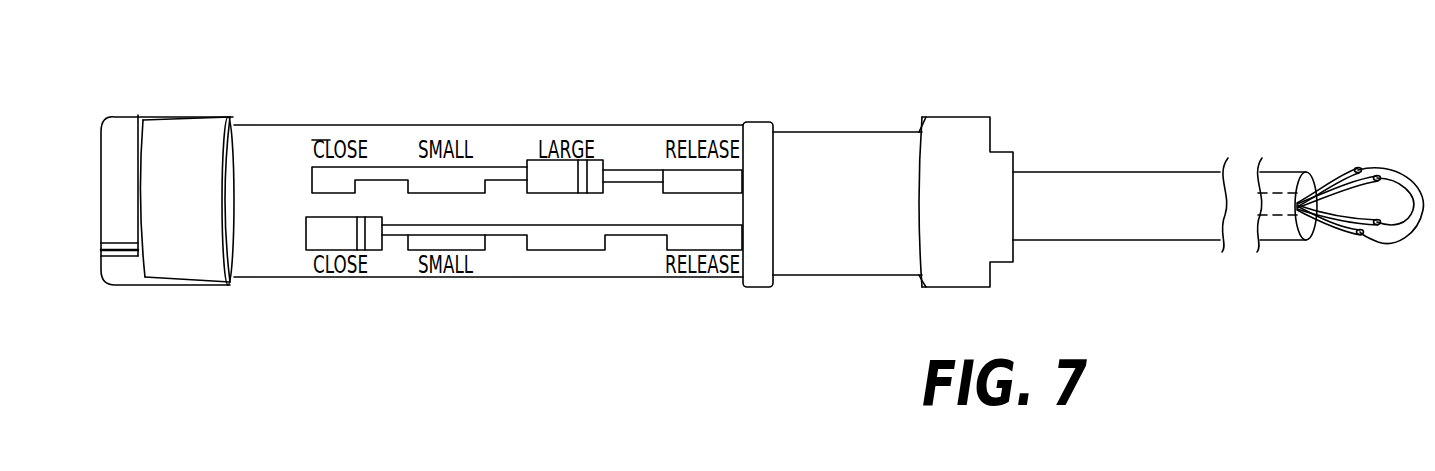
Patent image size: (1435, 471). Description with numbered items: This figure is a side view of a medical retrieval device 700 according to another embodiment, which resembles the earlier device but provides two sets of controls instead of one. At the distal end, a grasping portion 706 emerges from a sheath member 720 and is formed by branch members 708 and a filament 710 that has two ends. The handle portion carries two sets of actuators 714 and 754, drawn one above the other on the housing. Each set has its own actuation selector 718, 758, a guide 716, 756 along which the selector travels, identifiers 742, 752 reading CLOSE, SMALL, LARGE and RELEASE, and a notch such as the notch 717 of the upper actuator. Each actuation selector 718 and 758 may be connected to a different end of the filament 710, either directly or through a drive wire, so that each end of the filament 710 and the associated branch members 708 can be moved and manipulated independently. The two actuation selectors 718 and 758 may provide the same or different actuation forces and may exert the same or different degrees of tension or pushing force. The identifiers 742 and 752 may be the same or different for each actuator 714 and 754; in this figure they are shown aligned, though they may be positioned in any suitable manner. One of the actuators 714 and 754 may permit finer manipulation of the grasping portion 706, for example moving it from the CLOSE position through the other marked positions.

The medical device 700 is at (1178, 96).
The grasping portion 706 is at (1374, 251).
The branch members 708 is at (1335, 177).
The filament 710 is at (1390, 167).
The actuator 714 is at (298, 180).
The guide 716 is at (622, 172).
The notch 717 is at (728, 190).
The actuation selector 718 is at (590, 168).
The sheath member 720 is at (1275, 242).
The identifier 742 is at (333, 140).
The identifier 752 is at (597, 246).
The actuator 754 is at (290, 234).
The guide 756 is at (458, 235).
The actuation selector 758 is at (349, 233).